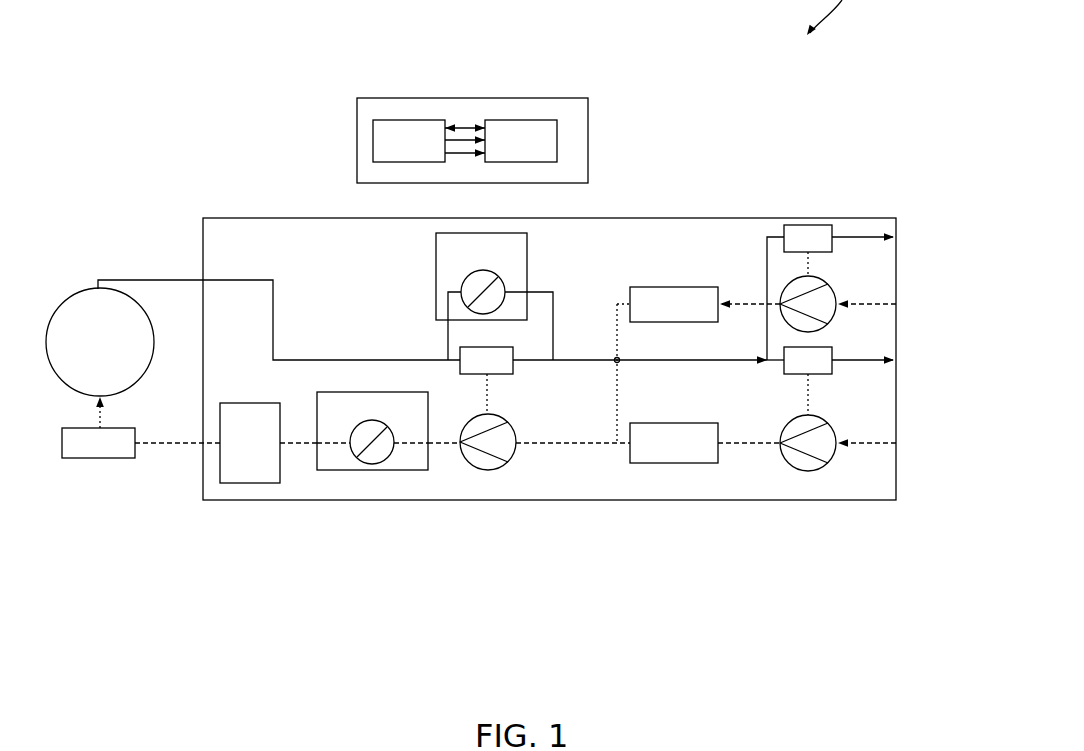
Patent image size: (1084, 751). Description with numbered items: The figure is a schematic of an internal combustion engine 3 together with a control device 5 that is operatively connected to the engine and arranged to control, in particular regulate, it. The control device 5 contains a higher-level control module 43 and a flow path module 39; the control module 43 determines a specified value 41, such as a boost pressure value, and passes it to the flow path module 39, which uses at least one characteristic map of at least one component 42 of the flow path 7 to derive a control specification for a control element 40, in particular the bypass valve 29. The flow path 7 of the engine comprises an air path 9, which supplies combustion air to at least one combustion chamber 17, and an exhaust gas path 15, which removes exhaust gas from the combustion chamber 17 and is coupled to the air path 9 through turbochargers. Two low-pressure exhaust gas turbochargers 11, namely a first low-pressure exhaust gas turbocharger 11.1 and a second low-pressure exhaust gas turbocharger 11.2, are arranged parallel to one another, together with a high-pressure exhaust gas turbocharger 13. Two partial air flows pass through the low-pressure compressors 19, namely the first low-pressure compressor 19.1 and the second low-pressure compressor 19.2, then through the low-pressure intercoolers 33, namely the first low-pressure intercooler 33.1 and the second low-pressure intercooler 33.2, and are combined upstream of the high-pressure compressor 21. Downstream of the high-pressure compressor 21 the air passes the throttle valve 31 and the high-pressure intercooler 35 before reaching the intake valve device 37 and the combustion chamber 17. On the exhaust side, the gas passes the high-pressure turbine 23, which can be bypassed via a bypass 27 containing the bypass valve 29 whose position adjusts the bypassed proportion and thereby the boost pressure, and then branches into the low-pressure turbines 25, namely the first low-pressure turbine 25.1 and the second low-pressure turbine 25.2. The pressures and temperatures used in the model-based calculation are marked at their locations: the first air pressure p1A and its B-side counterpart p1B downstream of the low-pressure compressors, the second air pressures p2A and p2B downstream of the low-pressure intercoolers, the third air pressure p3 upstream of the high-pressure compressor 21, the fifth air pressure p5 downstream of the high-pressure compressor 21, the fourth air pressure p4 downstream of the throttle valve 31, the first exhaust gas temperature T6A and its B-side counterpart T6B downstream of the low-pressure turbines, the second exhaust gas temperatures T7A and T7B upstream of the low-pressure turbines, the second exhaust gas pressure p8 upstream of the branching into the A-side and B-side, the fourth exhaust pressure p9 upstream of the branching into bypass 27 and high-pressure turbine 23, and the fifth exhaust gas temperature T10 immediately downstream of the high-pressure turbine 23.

The internal combustion engine 3 is at (781, 131).
The control device 5 is at (589, 108).
The higher-level control module 43 is at (373, 140).
The flow path module 39 is at (557, 148).
The flow path 7 is at (611, 240).
The air path 9 is at (589, 496).
The low-pressure exhaust gas turbochargers 11 is at (821, 262).
The first low-pressure exhaust gas turbocharger 11.1 is at (822, 408).
The second low-pressure exhaust gas turbocharger 11.2 is at (838, 304).
The high-pressure exhaust gas turbocharger 13 is at (499, 412).
The exhaust gas path 15 is at (294, 315).
The combustion chamber 17 is at (66, 298).
The low-pressure compressor 19 is at (862, 330).
The first low-pressure compressor 19.1 is at (808, 472).
The second low-pressure compressor 19.2 is at (804, 304).
The high-pressure compressor 21 is at (487, 472).
The high-pressure turbine 23 is at (515, 348).
The low-pressure turbines 25 is at (808, 225).
The first low-pressure turbine 25.1 is at (786, 374).
The second low-pressure turbine 25.2 is at (839, 250).
The bypass 27 is at (553, 347).
The bypass valve 29 is at (483, 292).
The throttle valve 31 is at (390, 460).
The low-pressure intercooler 33 is at (700, 287).
The first low-pressure intercooler 33.1 is at (673, 463).
The second low-pressure intercooler 33.2 is at (705, 304).
The high-pressure intercooler 35 is at (250, 483).
The intake valve device 37 is at (100, 458).
The control element 40 is at (483, 292).
The specified value 41 is at (168, 457).
The component 42 is at (478, 272).
The fourth air pressure p4 is at (302, 457).
The fifth air pressure p5 is at (450, 457).
The fourth exhaust pressure p9 is at (366, 352).
The fifth exhaust gas temperature T10 is at (539, 371).
The second air pressure on the B-side p2B is at (607, 331).
The pressure/temperature measuring point p1B is at (748, 294).
The temperature/pressure measuring point T6B is at (853, 231).
The second exhaust gas temperature for the B-side T7B is at (754, 320).
The second exhaust gas temperature T7A is at (761, 359).
The first exhaust gas temperature T6A is at (877, 381).
The second exhaust gas pressure p8 is at (602, 372).
The first air pressure p1A is at (755, 452).
The second air pressure p2A is at (620, 457).
The third air pressure p3 is at (551, 458).